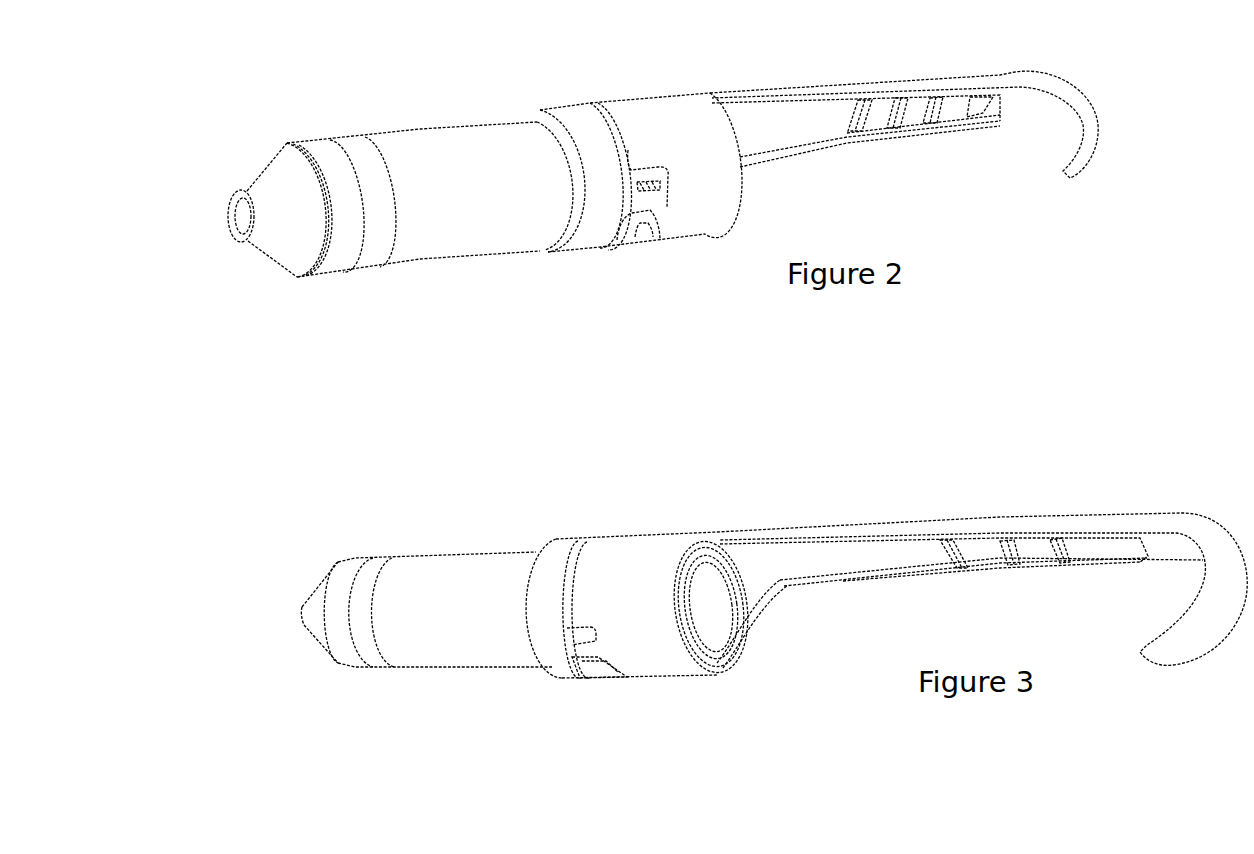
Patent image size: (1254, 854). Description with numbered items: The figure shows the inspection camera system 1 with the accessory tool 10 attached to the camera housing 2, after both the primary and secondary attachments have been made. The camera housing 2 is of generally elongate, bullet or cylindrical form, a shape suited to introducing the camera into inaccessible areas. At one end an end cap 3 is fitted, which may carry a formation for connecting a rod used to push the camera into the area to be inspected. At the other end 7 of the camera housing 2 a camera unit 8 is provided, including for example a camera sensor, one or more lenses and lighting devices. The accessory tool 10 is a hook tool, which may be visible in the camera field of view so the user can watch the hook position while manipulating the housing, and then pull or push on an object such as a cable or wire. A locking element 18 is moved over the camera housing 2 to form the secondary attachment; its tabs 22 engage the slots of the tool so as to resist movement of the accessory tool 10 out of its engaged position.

In FIG. 2, the device 1 is at (663, 247).
In FIG. 3, the device 1 is at (774, 602).
In FIG. 2, the camera housing 2 is at (468, 207).
In FIG. 3, the camera housing 2 is at (448, 590).
In FIG. 2, the end cap 3 is at (270, 235).
In FIG. 3, the other end 7 is at (790, 650).
In FIG. 3, the camera unit 8 is at (707, 613).
In FIG. 2, the accessory tool 10 is at (897, 117).
In FIG. 3, the accessory tool 10 is at (827, 568).
In FIG. 2, the locking element 18 is at (597, 223).
In FIG. 3, the locking element 18 is at (563, 662).
In FIG. 2, the tabs 22 is at (653, 197).
In FIG. 3, the tabs 22 is at (577, 647).